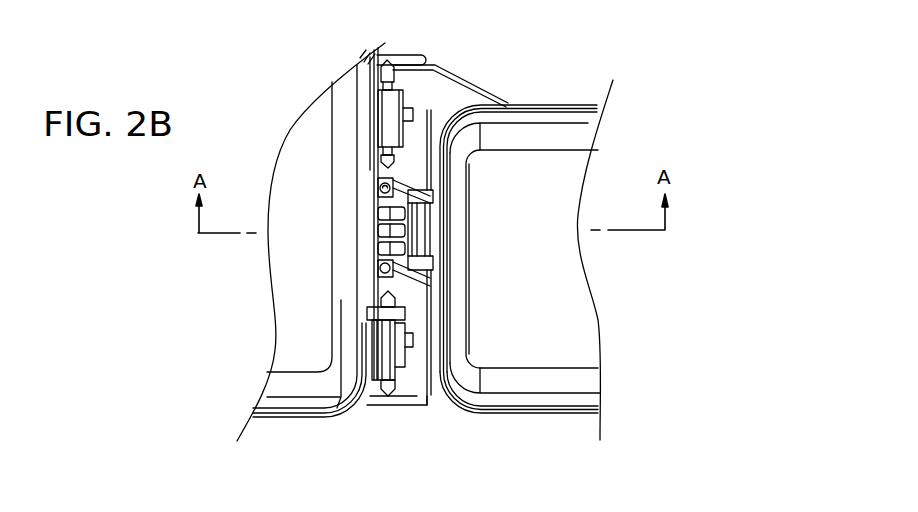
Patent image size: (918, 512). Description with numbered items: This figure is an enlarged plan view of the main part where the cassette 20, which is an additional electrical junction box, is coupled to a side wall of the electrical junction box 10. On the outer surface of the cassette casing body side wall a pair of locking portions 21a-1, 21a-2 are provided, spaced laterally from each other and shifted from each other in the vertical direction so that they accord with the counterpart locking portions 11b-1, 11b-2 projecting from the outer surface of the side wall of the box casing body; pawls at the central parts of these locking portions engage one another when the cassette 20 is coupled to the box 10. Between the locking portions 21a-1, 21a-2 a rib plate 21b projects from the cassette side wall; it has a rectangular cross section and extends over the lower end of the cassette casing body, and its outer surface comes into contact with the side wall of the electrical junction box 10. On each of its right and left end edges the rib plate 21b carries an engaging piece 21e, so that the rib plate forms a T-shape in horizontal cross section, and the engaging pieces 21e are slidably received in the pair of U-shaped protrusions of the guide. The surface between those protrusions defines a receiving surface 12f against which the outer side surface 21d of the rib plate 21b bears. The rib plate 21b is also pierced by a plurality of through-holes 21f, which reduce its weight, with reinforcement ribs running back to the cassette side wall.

The electrical junction box 10 is at (278, 418).
The cassette 20 is at (590, 412).
The locking portion 21a-1 is at (487, 82).
The locking portion 21a-2 is at (418, 390).
The rib plate 21b is at (406, 266).
The outer side surface 21d is at (377, 203).
The engaging piece 21e is at (418, 165).
The through-holes 21f is at (378, 249).
The receiving surface 12f is at (408, 231).
The counterpart locking portion 11b-1 is at (380, 403).
The counterpart locking portion 11b-2 is at (400, 57).